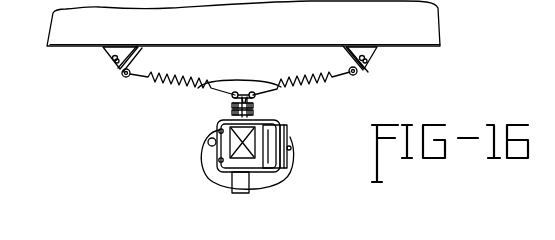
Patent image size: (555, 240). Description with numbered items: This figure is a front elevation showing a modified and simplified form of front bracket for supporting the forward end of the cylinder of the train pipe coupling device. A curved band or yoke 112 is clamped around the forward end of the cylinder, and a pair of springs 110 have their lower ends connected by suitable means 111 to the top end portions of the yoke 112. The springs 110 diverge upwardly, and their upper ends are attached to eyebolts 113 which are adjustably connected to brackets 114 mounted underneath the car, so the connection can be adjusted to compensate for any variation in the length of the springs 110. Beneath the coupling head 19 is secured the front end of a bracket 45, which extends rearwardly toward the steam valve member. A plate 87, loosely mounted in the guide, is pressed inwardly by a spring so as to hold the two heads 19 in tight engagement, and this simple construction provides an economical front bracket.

The springs 110 is at (240, 74).
The connecting means 111 is at (247, 97).
The curved band or yoke 112 is at (225, 127).
The eyebolts 113 is at (126, 77).
The brackets 114 is at (116, 67).
The head 19 is at (242, 158).
The bracket 45 is at (242, 188).
The plate 87 is at (288, 131).